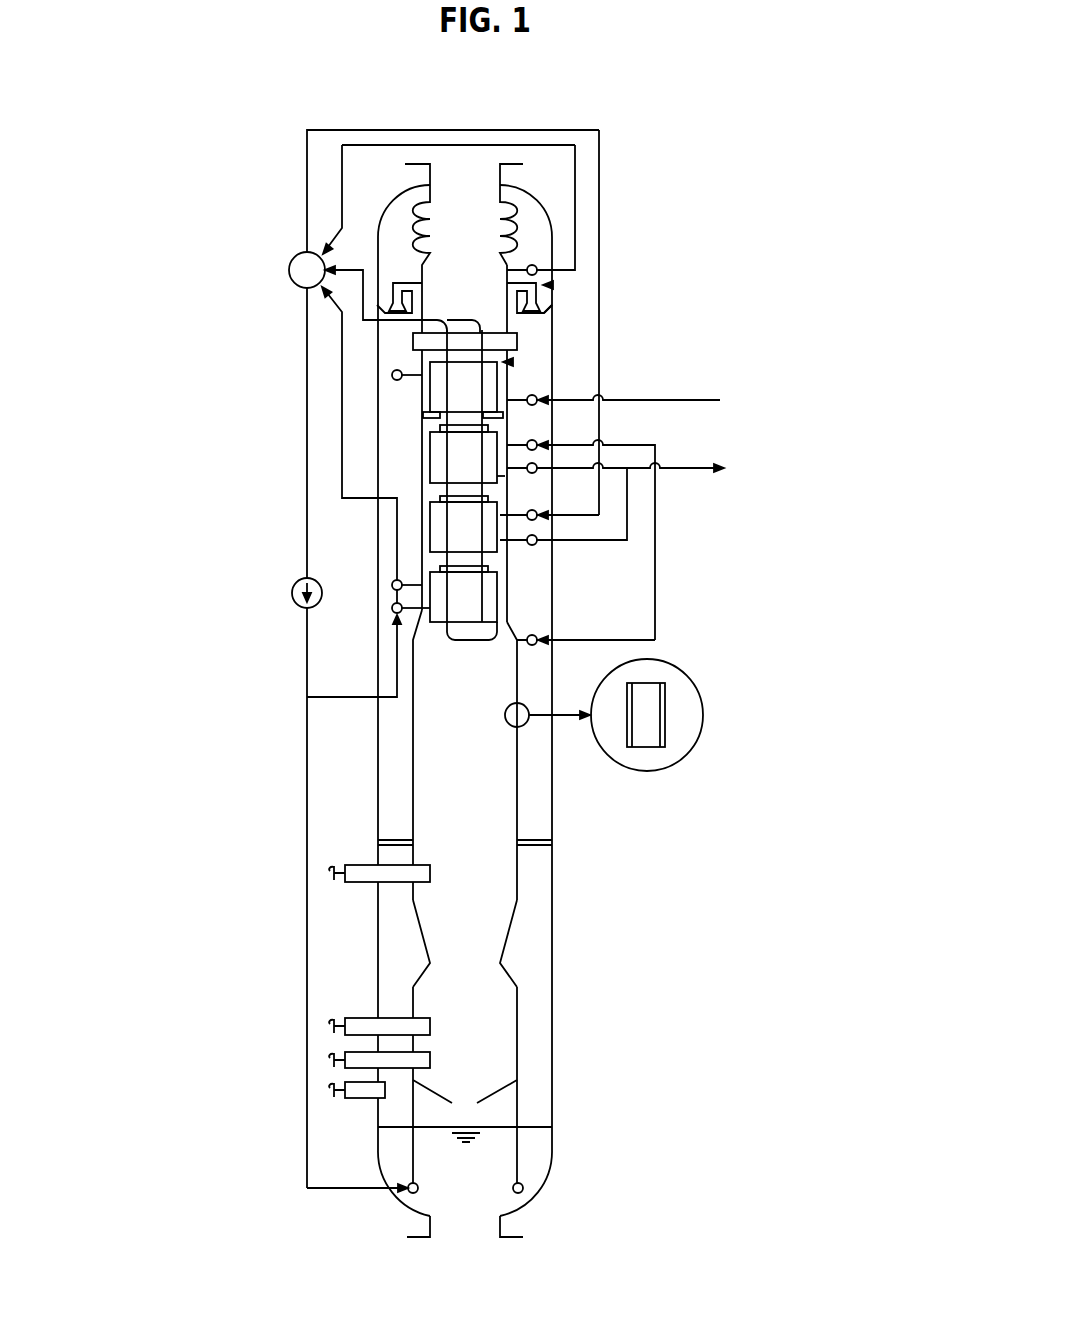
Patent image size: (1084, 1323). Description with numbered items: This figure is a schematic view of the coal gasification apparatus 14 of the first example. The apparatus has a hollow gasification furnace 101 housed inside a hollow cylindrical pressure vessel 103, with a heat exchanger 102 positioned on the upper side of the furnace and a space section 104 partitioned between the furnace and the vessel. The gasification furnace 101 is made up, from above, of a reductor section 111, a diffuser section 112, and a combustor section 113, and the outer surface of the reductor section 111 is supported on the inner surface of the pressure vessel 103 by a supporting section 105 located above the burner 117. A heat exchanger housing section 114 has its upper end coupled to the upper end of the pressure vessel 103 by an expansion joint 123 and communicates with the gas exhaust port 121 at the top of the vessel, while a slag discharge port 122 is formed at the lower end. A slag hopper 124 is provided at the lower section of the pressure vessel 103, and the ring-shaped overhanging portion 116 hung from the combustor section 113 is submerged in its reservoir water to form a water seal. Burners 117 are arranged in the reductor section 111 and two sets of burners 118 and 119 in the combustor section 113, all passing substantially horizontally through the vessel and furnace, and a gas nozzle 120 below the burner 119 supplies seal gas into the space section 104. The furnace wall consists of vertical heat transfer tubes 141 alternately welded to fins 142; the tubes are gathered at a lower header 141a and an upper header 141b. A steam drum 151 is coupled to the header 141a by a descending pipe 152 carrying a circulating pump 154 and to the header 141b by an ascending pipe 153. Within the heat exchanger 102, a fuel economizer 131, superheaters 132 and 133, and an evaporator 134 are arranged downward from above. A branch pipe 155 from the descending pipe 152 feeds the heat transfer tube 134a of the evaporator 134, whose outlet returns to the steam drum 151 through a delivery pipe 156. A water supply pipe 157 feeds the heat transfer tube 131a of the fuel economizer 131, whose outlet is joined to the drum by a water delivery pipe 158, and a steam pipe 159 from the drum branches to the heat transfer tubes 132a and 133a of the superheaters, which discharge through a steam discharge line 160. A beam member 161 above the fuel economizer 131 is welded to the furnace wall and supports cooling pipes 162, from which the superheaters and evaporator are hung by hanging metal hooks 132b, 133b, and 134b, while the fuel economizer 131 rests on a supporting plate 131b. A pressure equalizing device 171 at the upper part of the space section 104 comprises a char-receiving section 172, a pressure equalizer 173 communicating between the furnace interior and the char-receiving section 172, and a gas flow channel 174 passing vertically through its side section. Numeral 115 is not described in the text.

The coal gasification apparatus 14 is at (760, 185).
The gasification furnace 101 is at (528, 778).
The heat exchanger 102 is at (510, 362).
The pressure vessel 103 is at (558, 910).
The space section 104 is at (505, 965).
The supporting section 105 is at (528, 840).
The reductor section 111 is at (490, 771).
The diffuser section 112 is at (490, 949).
The combustor section 113 is at (490, 1044).
The heat exchanger housing section 114 is at (430, 445).
The pipe 115 is at (510, 630).
The overhanging portion 116 is at (517, 1107).
The burner 117 is at (352, 865).
The burner 118 is at (355, 1018).
The burner 119 is at (350, 1052).
The gas nozzle 120 is at (350, 1082).
The gas exhaust port 121 is at (456, 180).
The slag discharge port 122 is at (463, 1222).
The expansion joint 123 is at (530, 205).
The slag hopper 124 is at (555, 1182).
The fuel economizer 131 is at (492, 380).
The heat transfer tube 131a is at (399, 380).
The supporting plate 131b is at (503, 414).
The superheater 132 is at (492, 443).
The heat transfer tube 132a is at (505, 476).
The hanging metal hook 132b is at (440, 427).
The superheater 133 is at (492, 510).
The heat transfer tube 133a is at (518, 545).
The hanging metal hook 133b is at (455, 495).
The evaporator 134 is at (492, 585).
The heat transfer tube 134a is at (418, 613).
The hanging metal hook 134b is at (393, 582).
The heat transfer tube 141 is at (413, 718).
The header 141a is at (413, 1193).
The header 141b is at (534, 265).
The fin 142 is at (647, 722).
The steam drum 151 is at (290, 270).
The descending pipe 152 is at (305, 355).
The ascending pipe 153 is at (377, 145).
The circulating pump 154 is at (288, 594).
The branch pipe 155 is at (342, 697).
The delivery pipe 156 is at (342, 460).
The water supply pipe 157 is at (720, 400).
The water delivery pipe 158 is at (355, 268).
The steam pipe 159 is at (601, 150).
The steam discharge line 160 is at (724, 470).
The beam member 161 is at (413, 340).
The cooling pipe 162 is at (445, 528).
The pressure equalizing device 171 is at (548, 285).
The char-receiving section 172 is at (546, 309).
The pressure equalizer 173 is at (540, 292).
The gas flow channel 174 is at (512, 313).